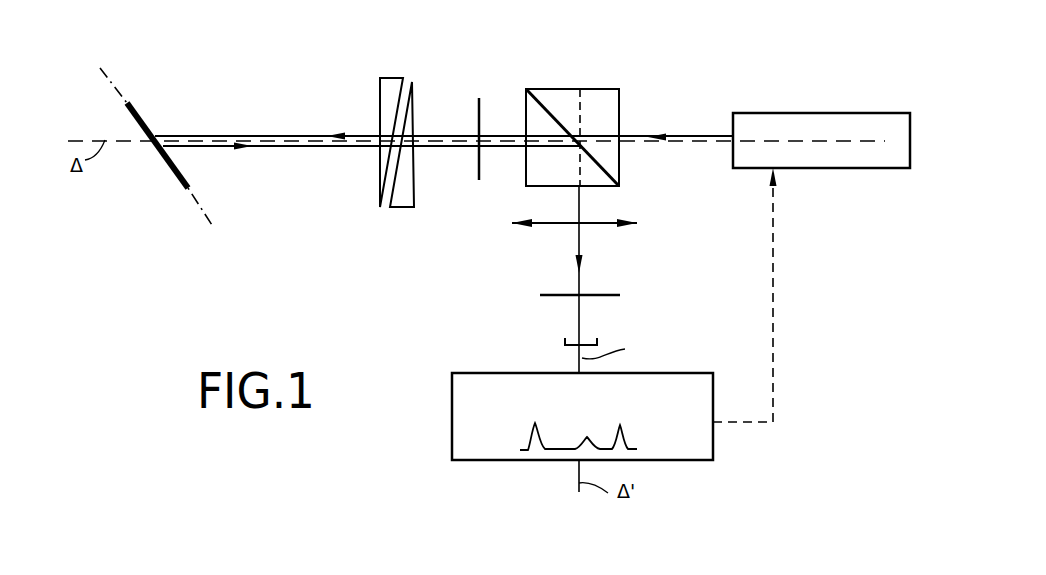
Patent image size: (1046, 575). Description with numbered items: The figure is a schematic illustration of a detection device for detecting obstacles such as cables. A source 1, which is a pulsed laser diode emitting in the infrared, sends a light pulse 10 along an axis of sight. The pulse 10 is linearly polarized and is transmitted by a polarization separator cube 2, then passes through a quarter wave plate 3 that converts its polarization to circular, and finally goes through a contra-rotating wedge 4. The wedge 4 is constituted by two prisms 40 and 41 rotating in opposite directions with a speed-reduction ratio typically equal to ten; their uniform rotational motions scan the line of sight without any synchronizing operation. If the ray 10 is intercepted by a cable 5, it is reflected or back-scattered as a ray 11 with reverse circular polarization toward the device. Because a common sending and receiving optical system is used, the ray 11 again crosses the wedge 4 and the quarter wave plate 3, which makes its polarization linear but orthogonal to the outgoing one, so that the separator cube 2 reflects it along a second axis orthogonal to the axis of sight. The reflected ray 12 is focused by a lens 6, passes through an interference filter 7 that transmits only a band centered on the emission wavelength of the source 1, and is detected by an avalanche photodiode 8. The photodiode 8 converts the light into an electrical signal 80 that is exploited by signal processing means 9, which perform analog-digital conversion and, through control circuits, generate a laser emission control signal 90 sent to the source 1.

The source 1 is at (833, 113).
The polarization separator cube 2 is at (605, 89).
The quarter wave plate 3 is at (477, 167).
The contra-rotating wedge 4 is at (373, 127).
The prism 40 is at (382, 162).
The prism 41 is at (400, 193).
The cable 5 is at (175, 182).
The lens 6 is at (633, 222).
The interference filter 7 is at (608, 293).
The avalanche photodiode 8 is at (566, 343).
The electrical signal 80 is at (617, 348).
The signal processing means 9 is at (495, 373).
The light pulse 10 is at (698, 137).
The reflected ray 11 is at (277, 148).
The reflected ray 12 is at (578, 203).
The laser emission control signal 90 is at (773, 283).